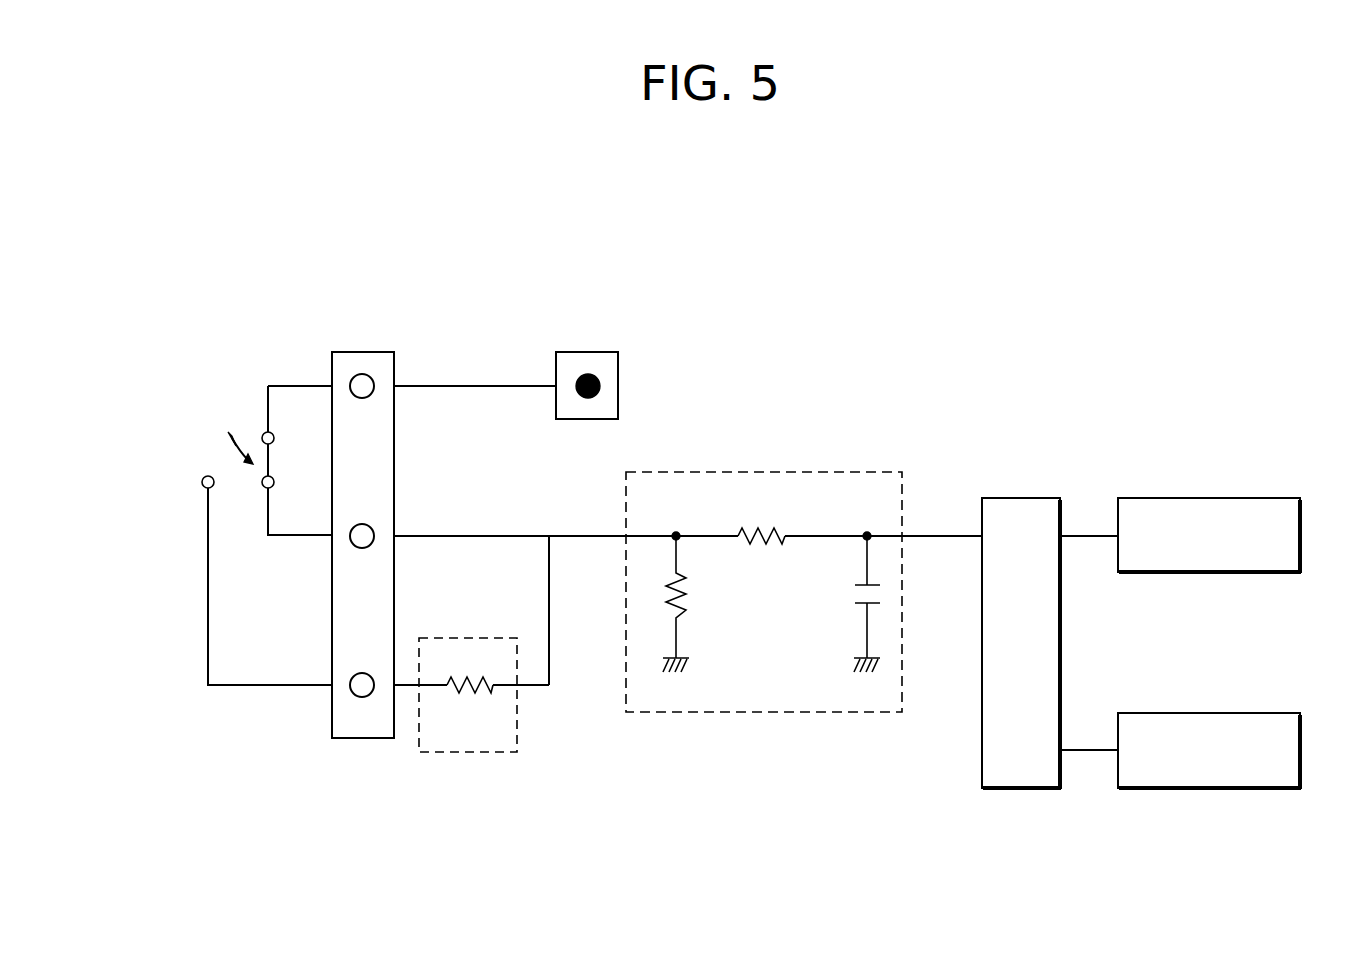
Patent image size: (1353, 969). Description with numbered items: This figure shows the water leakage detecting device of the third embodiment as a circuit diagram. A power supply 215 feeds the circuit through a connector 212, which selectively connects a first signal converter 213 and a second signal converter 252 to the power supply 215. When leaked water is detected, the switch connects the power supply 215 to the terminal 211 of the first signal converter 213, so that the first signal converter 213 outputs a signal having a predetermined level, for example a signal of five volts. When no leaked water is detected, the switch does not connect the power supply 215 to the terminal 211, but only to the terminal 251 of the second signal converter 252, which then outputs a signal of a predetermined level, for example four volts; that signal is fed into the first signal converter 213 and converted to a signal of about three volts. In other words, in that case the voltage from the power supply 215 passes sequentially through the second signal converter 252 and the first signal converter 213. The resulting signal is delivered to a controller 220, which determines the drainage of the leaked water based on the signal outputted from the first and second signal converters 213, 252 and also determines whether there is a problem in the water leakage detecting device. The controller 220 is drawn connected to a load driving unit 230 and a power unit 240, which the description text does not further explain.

The terminal 211 is at (265, 487).
The connector 212 is at (362, 738).
The first signal converter 213 is at (848, 472).
The power supply 215 is at (588, 360).
The controller 220 is at (1022, 782).
The load driving unit 230 is at (1233, 508).
The power unit 240 is at (1208, 778).
The terminal 251 is at (202, 482).
The second signal converter 252 is at (475, 752).